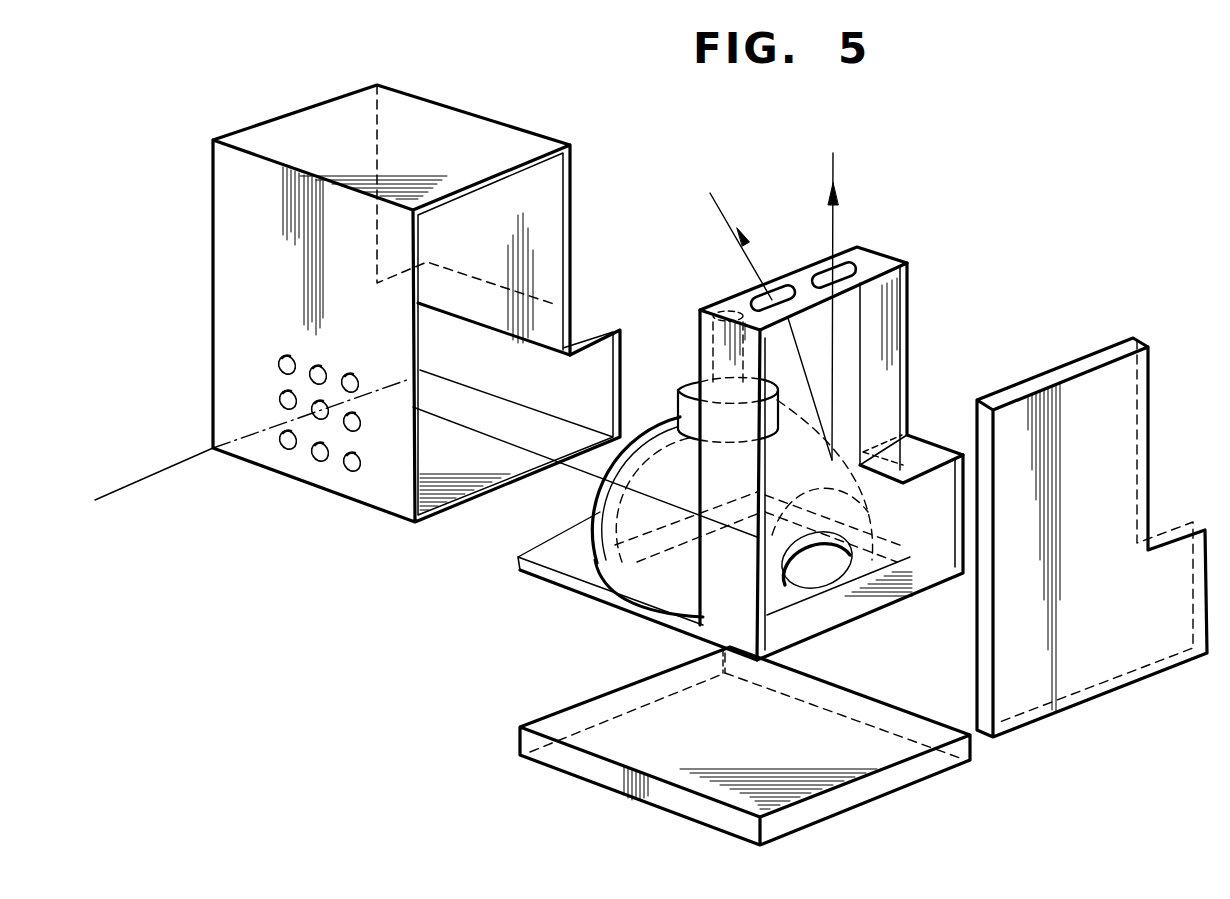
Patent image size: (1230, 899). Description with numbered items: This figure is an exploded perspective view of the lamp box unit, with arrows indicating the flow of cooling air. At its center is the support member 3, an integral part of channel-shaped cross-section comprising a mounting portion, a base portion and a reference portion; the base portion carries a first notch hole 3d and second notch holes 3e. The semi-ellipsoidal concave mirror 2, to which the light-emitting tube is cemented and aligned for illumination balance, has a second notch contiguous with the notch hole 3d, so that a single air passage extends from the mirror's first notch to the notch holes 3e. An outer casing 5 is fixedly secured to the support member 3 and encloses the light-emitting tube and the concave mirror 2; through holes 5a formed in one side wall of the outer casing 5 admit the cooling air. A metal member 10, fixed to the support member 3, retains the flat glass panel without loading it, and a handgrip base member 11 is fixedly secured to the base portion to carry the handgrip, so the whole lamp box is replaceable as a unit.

The outer casing 5 is at (300, 125).
The through holes 5a is at (318, 452).
The concave mirror 2 is at (597, 503).
The support member 3 is at (887, 337).
The second notch holes 3e is at (843, 266).
The first notch hole 3d is at (805, 568).
The metal member 10 is at (870, 790).
The handgrip base member 11 is at (1117, 683).